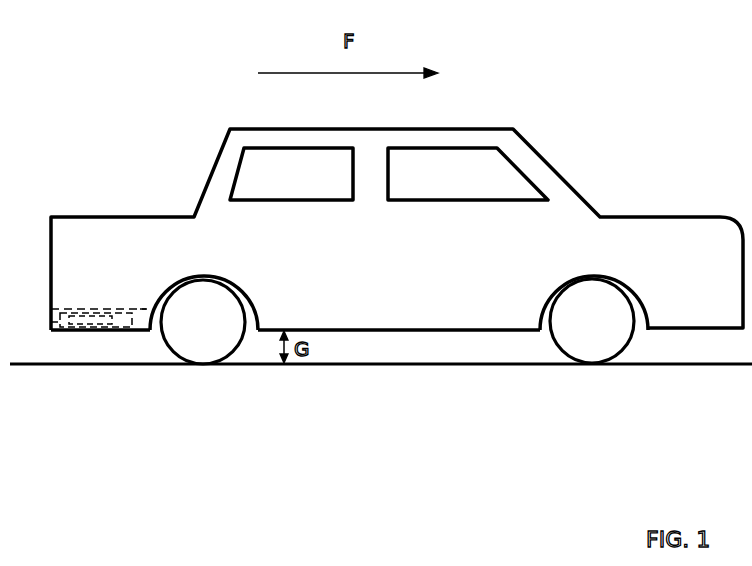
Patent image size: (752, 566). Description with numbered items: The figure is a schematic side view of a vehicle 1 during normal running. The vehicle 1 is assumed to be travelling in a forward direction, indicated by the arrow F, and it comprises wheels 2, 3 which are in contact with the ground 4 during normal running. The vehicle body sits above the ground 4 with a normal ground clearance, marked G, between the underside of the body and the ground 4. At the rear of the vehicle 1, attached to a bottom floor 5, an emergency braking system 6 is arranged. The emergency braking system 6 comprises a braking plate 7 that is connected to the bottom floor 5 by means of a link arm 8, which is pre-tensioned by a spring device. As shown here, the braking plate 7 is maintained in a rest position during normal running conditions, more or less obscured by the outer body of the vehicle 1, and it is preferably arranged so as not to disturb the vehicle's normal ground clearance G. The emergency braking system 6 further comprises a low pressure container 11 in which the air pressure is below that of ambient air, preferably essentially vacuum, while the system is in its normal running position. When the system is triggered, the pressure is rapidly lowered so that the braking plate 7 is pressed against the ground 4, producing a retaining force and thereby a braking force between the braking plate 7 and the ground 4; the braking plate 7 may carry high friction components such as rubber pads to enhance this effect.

The vehicle 1 is at (580, 143).
The wheel 2 is at (201, 347).
The wheel 3 is at (592, 345).
The ground 4 is at (344, 366).
The bottom floor 5 is at (137, 308).
The emergency braking system 6 is at (73, 296).
The braking plate 7 is at (88, 321).
The link arm 8 is at (108, 307).
The low pressure container 11 is at (46, 322).